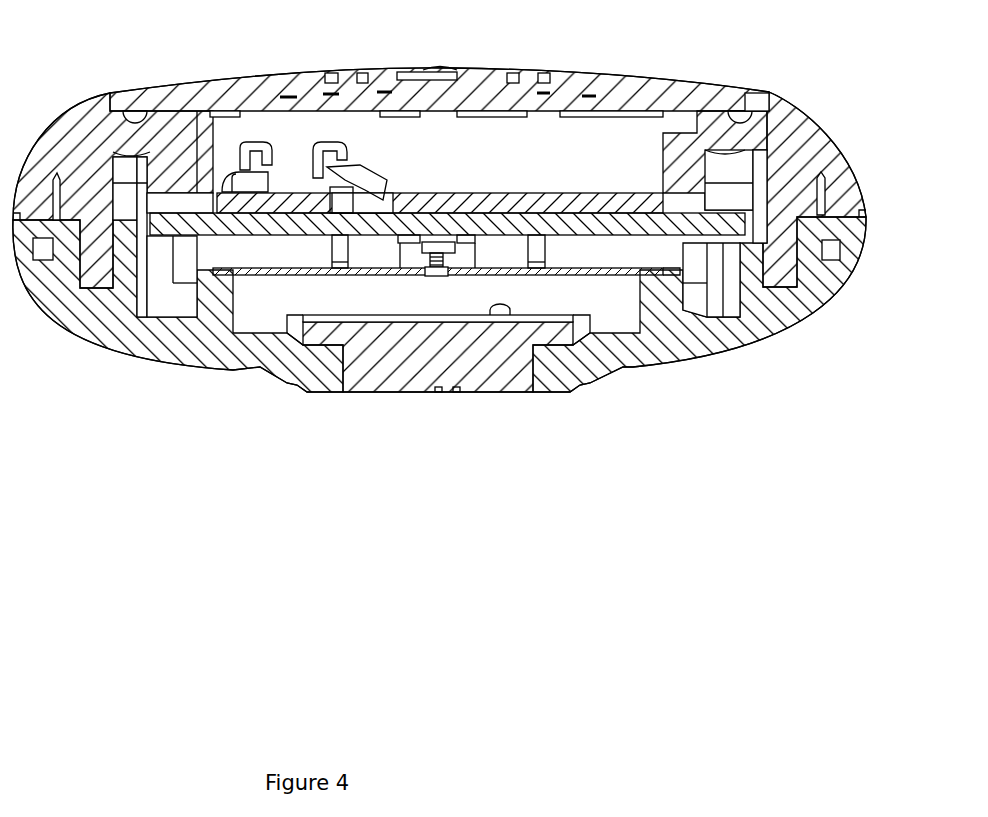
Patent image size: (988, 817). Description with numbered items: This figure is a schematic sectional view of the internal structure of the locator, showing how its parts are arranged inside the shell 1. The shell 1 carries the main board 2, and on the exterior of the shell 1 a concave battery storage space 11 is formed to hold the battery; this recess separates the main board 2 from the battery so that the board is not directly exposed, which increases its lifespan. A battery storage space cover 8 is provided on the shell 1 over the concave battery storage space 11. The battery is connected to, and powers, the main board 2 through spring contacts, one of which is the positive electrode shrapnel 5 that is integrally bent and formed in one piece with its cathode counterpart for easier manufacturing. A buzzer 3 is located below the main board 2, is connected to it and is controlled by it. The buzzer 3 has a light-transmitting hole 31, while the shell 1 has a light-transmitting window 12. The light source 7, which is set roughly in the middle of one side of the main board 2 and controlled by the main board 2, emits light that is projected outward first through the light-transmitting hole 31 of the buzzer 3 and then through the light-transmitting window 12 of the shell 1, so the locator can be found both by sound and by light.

The shell 1 is at (835, 160).
The main board 2 is at (663, 230).
The buzzer 3 is at (564, 272).
The positive electrode shrapnel 5 is at (252, 140).
The light source 7 is at (427, 255).
The battery storage space cover 8 is at (477, 93).
The concave battery storage space 11 is at (550, 168).
The light-transmitting window 12 is at (452, 362).
The light-transmitting hole 31 is at (432, 272).